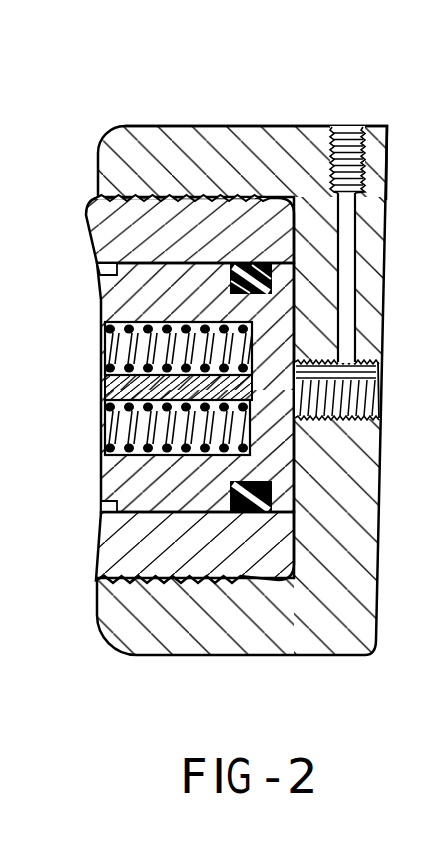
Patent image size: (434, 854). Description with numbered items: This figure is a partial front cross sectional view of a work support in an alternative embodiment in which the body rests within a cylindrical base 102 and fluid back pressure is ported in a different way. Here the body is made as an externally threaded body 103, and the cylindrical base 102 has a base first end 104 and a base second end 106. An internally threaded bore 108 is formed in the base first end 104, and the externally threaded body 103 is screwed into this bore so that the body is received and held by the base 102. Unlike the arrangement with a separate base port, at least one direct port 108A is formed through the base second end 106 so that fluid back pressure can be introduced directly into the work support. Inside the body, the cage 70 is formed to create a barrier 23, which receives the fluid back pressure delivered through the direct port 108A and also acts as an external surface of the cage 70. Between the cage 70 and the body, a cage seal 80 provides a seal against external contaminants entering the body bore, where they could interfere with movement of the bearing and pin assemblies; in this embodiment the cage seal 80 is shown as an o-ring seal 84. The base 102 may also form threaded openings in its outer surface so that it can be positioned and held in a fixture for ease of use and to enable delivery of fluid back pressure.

The cage 70 is at (177, 273).
The cylindrical base 102 is at (360, 620).
The externally threaded body 103 is at (157, 570).
The base first end 104 is at (100, 150).
The base second end 106 is at (388, 152).
The internally threaded bore 108 is at (192, 198).
The direct port 108A is at (333, 125).
The barrier 23 is at (297, 397).
The cage seal 80 is at (276, 493).
The o-ring seal 84 is at (264, 514).